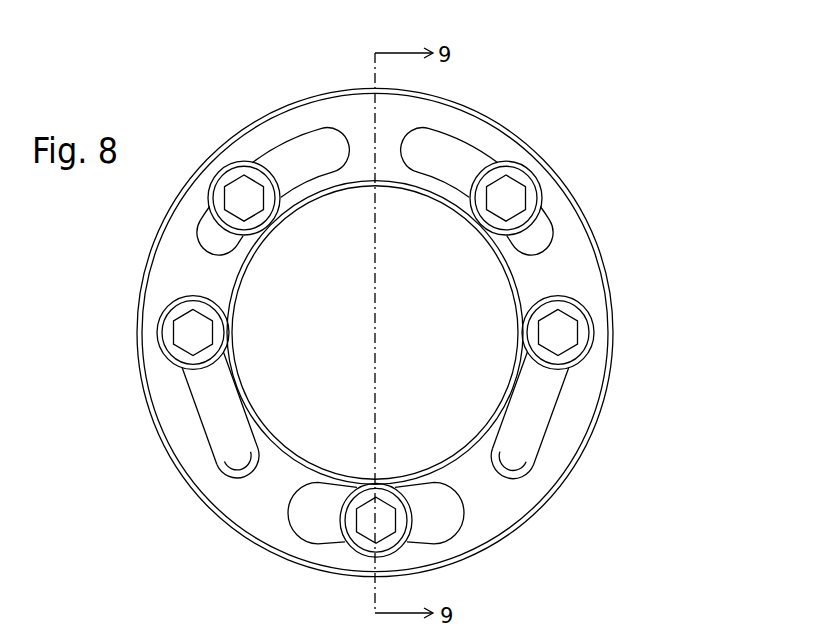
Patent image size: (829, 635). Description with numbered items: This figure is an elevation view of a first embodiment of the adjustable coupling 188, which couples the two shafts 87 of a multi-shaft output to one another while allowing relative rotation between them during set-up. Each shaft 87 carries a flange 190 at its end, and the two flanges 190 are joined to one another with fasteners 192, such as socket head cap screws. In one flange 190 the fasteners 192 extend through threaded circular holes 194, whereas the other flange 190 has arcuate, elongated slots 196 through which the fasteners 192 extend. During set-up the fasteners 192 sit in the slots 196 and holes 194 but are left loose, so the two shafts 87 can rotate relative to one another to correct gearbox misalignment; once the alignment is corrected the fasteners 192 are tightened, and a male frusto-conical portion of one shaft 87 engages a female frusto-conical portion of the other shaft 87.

The adjustable coupling 188 is at (618, 150).
The flange 190 is at (268, 112).
The fastener 192 is at (594, 344).
The threaded circular hole 194 is at (504, 447).
The arcuate elongated slot 196 is at (545, 397).
The shaft 87 is at (493, 290).